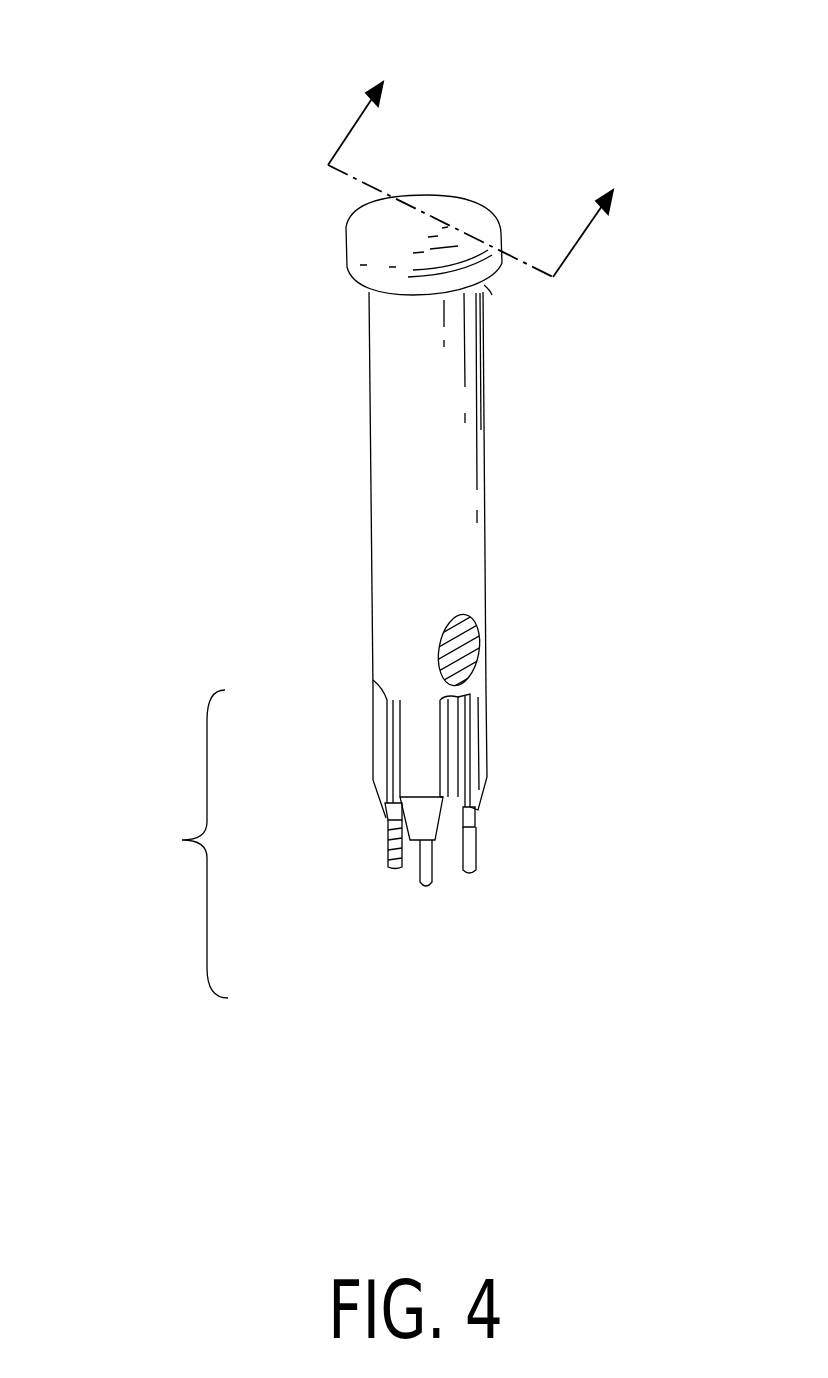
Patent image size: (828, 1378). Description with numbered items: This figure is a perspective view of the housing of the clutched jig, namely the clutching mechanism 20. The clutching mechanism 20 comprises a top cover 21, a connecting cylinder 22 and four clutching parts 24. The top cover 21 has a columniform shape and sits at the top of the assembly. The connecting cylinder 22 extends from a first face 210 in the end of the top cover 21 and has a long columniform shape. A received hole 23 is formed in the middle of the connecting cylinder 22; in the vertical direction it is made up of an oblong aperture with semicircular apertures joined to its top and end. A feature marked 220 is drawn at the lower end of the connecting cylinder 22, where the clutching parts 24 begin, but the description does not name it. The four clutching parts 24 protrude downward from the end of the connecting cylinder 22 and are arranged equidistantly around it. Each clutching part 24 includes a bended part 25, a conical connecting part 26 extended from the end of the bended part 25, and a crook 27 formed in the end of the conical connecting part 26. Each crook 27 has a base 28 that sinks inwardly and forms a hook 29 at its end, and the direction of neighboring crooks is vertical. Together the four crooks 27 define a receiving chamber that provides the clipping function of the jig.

The clutching mechanism 20 is at (467, 193).
The top cover 21 is at (368, 232).
The first face 210 is at (488, 283).
The connecting cylinder 22 is at (413, 443).
The received hole 23 is at (453, 660).
The tab 220 is at (377, 690).
The clutching part 24 is at (296, 844).
The bended part 25 is at (420, 742).
The conical connecting part 26 is at (422, 818).
The crook 27 is at (400, 843).
The base 28 is at (421, 876).
The hook 29 is at (432, 884).